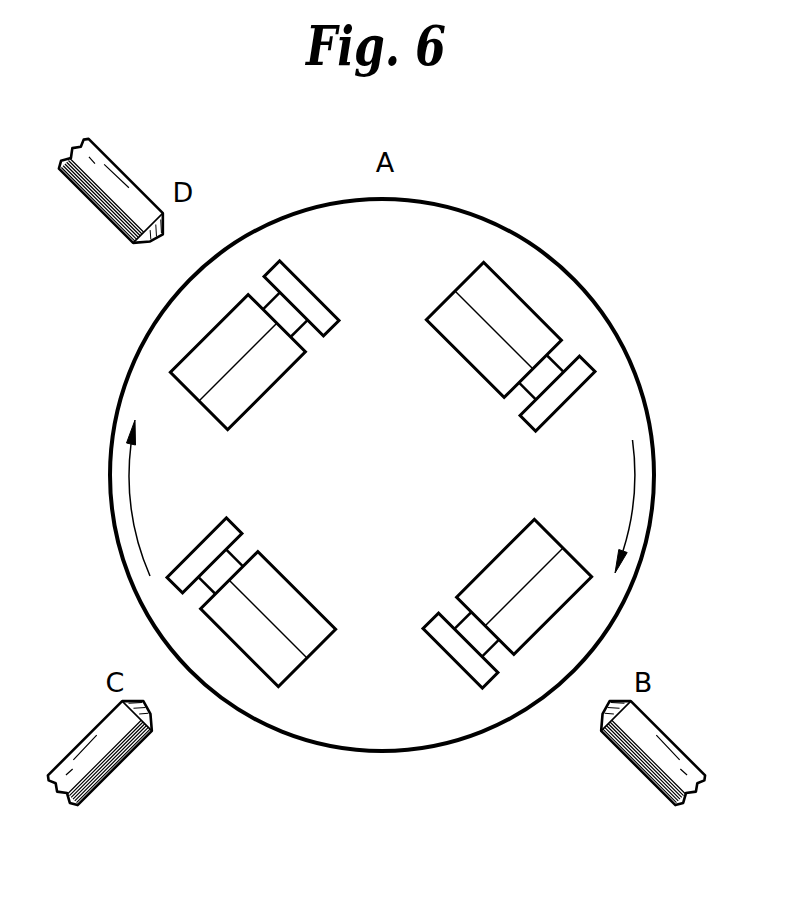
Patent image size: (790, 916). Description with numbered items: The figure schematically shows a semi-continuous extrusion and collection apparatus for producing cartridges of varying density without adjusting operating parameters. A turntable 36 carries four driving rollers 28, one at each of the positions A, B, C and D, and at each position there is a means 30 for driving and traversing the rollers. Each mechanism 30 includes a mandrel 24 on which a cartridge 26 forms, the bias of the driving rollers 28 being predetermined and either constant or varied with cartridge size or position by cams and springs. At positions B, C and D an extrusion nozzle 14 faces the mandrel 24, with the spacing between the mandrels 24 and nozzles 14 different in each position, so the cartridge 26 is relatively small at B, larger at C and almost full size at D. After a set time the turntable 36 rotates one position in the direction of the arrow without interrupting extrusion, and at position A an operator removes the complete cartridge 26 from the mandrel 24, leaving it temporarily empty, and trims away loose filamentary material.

The extrusion nozzle 14 is at (650, 750).
The mandrel 24 is at (519, 298).
The cartridge 26 is at (563, 608).
The driving roller 28 is at (318, 650).
The means for driving and traversing the rollers 30 is at (315, 298).
The turntable 36 is at (636, 433).